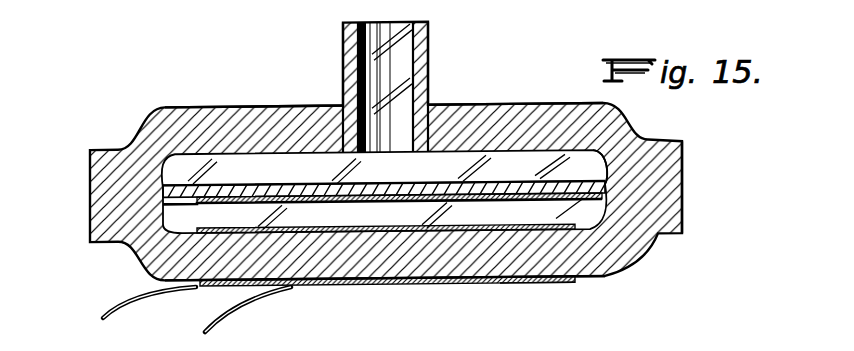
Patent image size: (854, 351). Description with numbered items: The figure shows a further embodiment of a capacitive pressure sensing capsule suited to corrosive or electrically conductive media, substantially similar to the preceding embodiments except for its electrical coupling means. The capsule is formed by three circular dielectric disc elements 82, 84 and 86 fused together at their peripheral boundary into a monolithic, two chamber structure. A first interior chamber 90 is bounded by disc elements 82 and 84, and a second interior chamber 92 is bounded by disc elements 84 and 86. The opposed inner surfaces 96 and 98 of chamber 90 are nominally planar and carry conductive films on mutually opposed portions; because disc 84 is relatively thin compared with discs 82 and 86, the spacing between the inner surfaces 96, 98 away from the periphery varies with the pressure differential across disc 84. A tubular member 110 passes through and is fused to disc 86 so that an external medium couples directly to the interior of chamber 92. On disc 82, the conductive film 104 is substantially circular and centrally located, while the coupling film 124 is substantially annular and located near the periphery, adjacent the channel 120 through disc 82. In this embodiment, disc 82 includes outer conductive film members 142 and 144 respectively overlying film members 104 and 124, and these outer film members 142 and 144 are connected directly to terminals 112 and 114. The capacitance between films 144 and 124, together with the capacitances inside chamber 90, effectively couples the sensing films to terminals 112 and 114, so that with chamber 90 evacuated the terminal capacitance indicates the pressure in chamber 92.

The dielectric disc element 82 is at (186, 255).
The dielectric disc element 84 is at (172, 193).
The dielectric disc element 86 is at (192, 136).
The first interior chamber 90 is at (606, 278).
The second interior chamber 92 is at (590, 178).
The inner surface 96 is at (170, 212).
The inner surface 98 is at (646, 239).
The conductive film 104 is at (430, 213).
The tubular member 110 is at (390, 54).
The terminal 112 is at (216, 328).
The terminal 114 is at (103, 313).
The channel 120 is at (243, 200).
The coupling film 124 is at (520, 202).
The outer conductive film member 142 is at (358, 284).
The outer conductive film member 144 is at (545, 288).